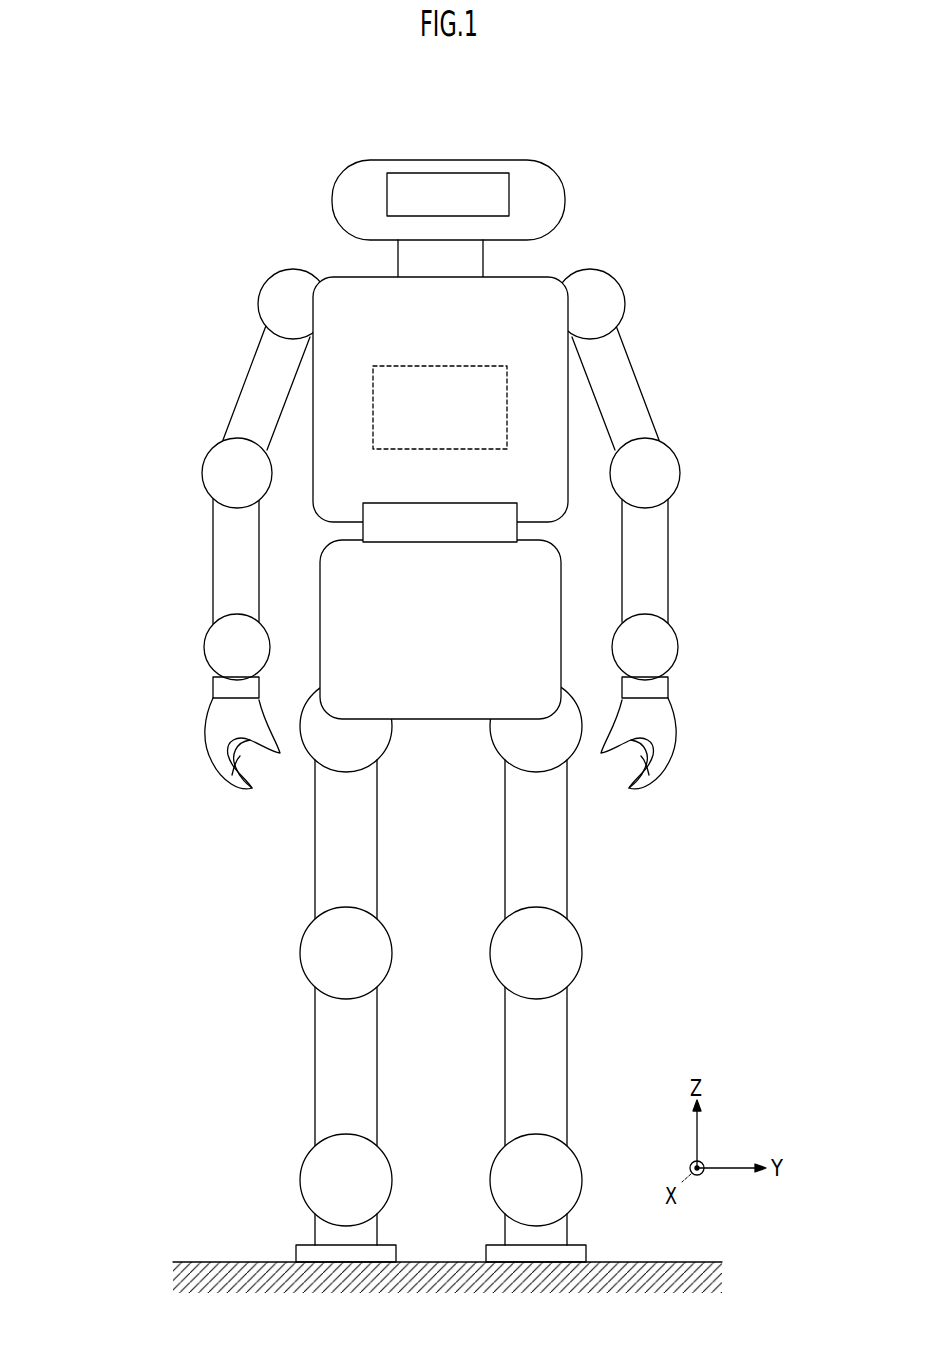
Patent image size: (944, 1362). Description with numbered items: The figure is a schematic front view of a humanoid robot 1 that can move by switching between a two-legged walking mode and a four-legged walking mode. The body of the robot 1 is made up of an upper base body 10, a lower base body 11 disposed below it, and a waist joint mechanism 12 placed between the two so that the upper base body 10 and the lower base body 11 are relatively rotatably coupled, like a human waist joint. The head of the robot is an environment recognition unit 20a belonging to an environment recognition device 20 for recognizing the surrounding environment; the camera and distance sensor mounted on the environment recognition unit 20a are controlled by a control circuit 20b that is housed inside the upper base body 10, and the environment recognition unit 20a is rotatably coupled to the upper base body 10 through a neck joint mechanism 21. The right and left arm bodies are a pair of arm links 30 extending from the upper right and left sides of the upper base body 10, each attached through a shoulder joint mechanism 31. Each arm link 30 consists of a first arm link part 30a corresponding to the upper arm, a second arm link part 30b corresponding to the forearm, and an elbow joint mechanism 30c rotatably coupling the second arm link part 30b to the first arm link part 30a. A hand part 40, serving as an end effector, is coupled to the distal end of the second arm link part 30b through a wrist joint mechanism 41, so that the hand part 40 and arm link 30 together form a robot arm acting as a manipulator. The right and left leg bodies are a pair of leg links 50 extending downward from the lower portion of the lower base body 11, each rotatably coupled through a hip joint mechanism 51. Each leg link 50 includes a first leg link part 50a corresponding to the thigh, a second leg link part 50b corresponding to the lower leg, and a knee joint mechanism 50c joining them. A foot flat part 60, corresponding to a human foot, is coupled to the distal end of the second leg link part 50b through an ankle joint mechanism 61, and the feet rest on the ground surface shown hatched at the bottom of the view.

The robot 1 is at (650, 80).
The upper base body 10 is at (550, 467).
The lower base body 11 is at (535, 602).
The waist joint mechanism 12 is at (503, 530).
The environment recognition device 20 is at (480, 146).
The environment recognition unit 20a is at (549, 188).
The control circuit for environment recognition unit 20b is at (450, 365).
The neck joint mechanism 21 is at (480, 258).
The arm link 30 is at (128, 410).
The first arm link part 30a is at (218, 393).
The second arm link part 30b is at (222, 532).
The elbow joint mechanism 30c is at (224, 470).
The shoulder joint mechanism 31 is at (282, 302).
The hand part 40 is at (210, 728).
The wrist joint mechanism 41 is at (224, 650).
The leg link 50 is at (213, 892).
The first leg link part 50a is at (318, 878).
The second leg link part 50b is at (318, 1012).
The knee joint mechanism 50c is at (316, 962).
The hip joint mechanism 51 is at (318, 756).
The foot flat part 60 is at (300, 1242).
The ankle joint mechanism 61 is at (318, 1170).